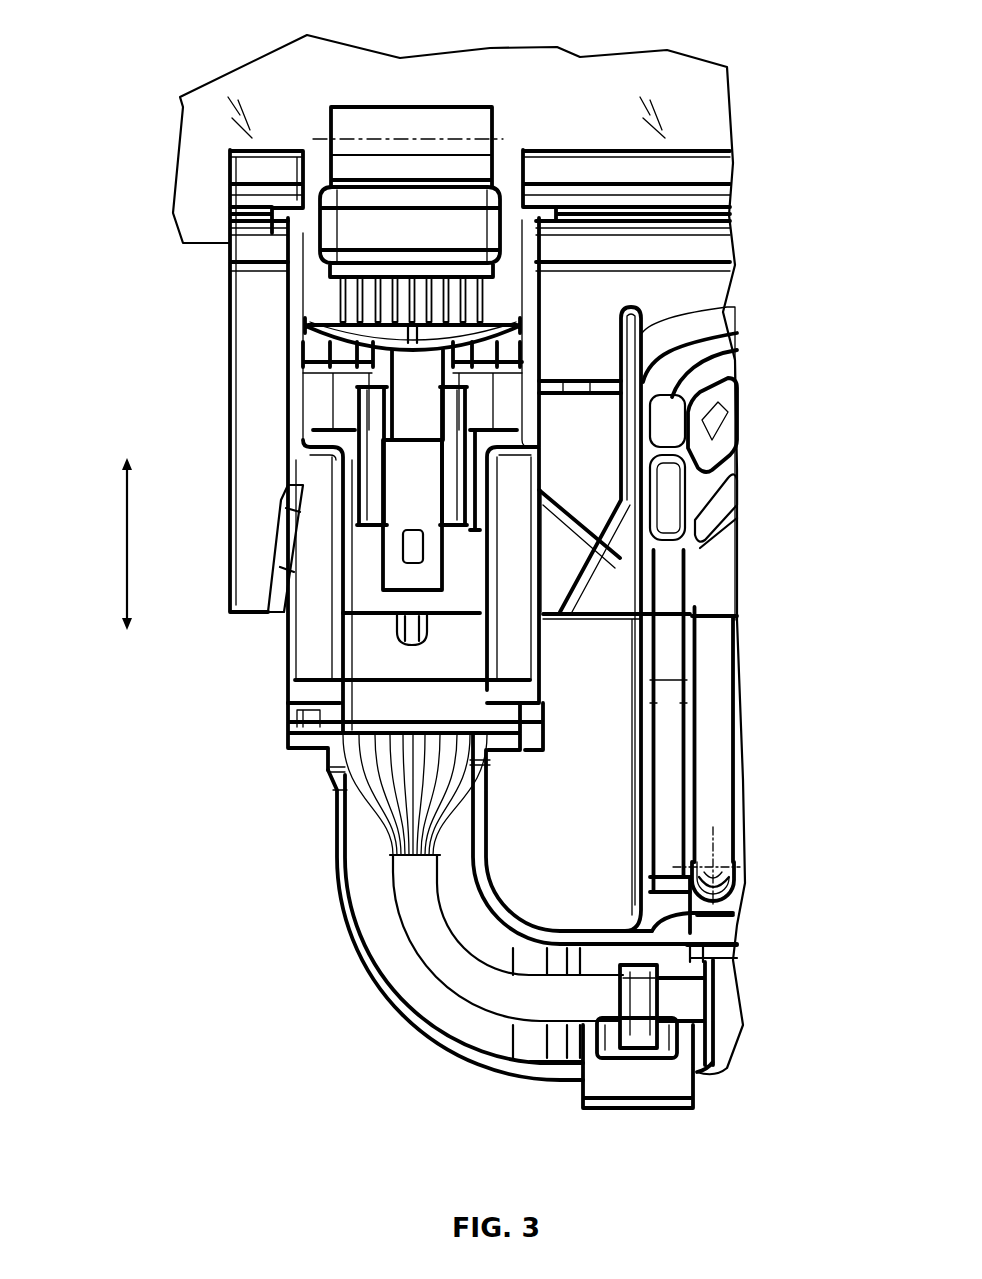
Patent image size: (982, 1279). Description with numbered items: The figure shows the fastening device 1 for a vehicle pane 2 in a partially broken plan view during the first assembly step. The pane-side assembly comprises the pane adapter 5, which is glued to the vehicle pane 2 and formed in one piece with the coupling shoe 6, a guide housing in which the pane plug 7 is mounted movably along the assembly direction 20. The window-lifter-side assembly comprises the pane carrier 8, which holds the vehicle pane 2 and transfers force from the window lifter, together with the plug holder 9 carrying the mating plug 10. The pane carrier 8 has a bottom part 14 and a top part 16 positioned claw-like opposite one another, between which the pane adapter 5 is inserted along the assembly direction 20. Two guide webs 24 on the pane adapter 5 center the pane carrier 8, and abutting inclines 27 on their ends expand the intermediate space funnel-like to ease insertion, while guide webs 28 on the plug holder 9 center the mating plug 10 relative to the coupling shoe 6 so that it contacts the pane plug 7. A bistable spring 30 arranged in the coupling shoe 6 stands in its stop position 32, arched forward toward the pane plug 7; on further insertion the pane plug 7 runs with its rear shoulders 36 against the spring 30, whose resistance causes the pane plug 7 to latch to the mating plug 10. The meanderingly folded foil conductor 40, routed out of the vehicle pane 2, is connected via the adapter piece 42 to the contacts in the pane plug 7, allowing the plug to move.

The fastening device 1 is at (143, 353).
The vehicle pane 2 is at (647, 82).
The pane adapter 5 is at (747, 230).
The coupling shoe 6 is at (290, 313).
The pane plug 7 is at (363, 590).
The pane carrier 8 is at (750, 715).
The plug holder 9 is at (337, 893).
The mating plug 10 is at (387, 697).
The bottom part 14 is at (727, 767).
The top part 16 is at (700, 807).
The assembly direction 20 is at (127, 533).
The guide webs 24 is at (645, 325).
The abutting inclines 27 is at (613, 562).
The guide webs 28 is at (277, 660).
The bistable spring 30 is at (362, 345).
The stop position 32 is at (280, 367).
The shoulders 36 is at (460, 390).
The foil conductor 40 is at (492, 127).
The adapter piece 42 is at (503, 220).